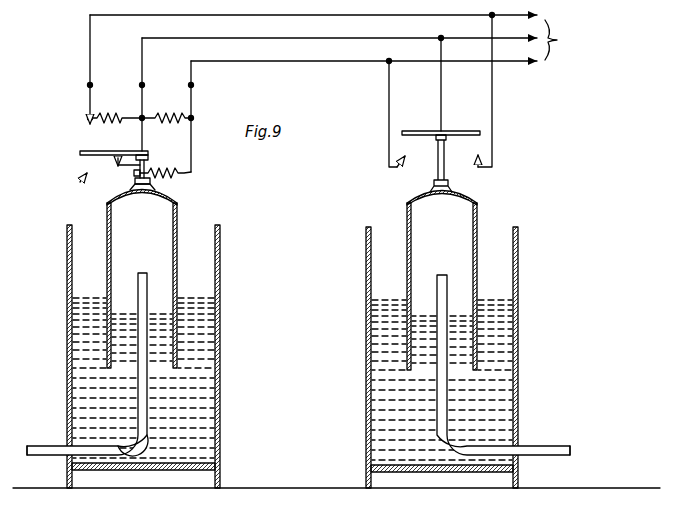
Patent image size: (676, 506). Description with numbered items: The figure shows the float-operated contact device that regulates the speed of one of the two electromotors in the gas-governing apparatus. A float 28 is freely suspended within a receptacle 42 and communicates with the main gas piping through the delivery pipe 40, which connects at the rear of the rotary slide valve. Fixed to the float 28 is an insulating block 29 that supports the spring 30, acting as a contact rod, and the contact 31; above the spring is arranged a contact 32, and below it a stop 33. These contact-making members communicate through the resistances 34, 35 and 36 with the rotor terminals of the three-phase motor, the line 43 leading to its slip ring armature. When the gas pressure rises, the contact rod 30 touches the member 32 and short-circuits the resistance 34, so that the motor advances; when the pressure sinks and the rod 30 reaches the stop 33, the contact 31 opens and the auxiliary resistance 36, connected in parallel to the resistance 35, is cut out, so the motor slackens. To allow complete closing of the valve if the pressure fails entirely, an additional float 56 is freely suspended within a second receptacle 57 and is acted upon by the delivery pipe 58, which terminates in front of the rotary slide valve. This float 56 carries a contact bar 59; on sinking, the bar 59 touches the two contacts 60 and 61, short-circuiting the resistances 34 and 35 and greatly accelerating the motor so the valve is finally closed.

The float 28 is at (112, 258).
The insulating block 29 is at (146, 165).
The spring 30 is at (80, 153).
The contact 31 is at (118, 166).
The contact 32 is at (86, 128).
The stop 33 is at (72, 186).
The resistance 34 is at (116, 108).
The resistance 35 is at (166, 108).
The auxiliary resistance 36 is at (184, 173).
The pipe 40 is at (47, 446).
The receptacle 42 is at (67, 323).
The line 43 is at (333, 93).
The additional float 56 is at (412, 252).
The receptacle 57 is at (366, 343).
The delivery pipe 58 is at (555, 446).
The contact bar 59 is at (430, 131).
The contact 60 is at (398, 167).
The contact 61 is at (478, 167).